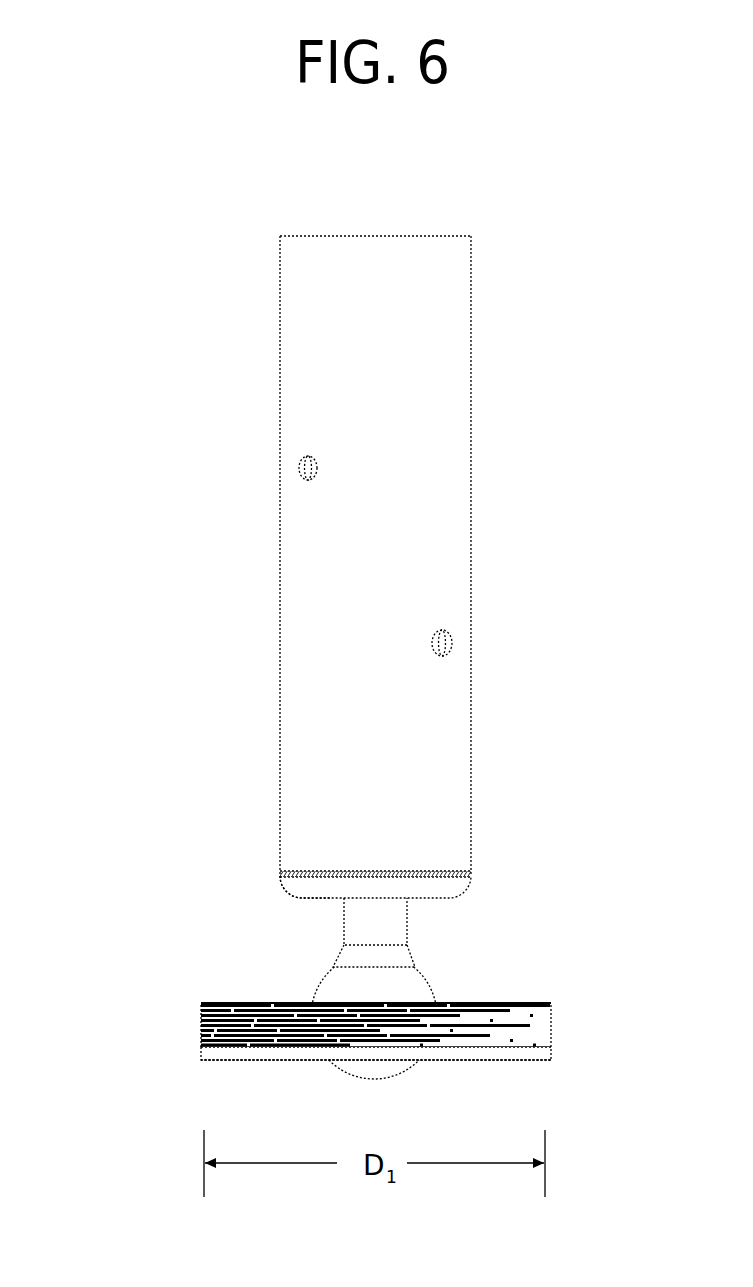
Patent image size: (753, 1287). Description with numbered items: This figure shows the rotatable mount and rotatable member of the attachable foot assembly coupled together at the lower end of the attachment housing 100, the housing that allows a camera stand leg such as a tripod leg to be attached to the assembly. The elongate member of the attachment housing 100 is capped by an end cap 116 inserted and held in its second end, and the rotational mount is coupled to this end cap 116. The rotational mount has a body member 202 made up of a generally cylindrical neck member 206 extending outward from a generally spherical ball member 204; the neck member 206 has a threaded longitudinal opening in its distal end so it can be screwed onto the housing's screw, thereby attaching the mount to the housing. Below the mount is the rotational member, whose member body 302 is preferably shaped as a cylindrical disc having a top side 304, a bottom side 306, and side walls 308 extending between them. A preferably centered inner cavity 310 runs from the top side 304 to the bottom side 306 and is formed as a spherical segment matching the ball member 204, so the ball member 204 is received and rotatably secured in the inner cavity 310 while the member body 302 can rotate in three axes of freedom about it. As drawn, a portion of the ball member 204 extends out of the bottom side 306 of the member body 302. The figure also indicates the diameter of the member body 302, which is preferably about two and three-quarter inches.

The attachment housing 100 is at (556, 265).
The end cap 116 is at (307, 898).
The body member 202 is at (371, 994).
The ball member 204 is at (428, 977).
The neck member 206 is at (408, 920).
The member body 302 is at (358, 1022).
The top side 304 is at (225, 997).
The bottom side 306 is at (507, 1060).
The side walls 308 is at (550, 1022).
The inner cavity 310 is at (322, 1063).